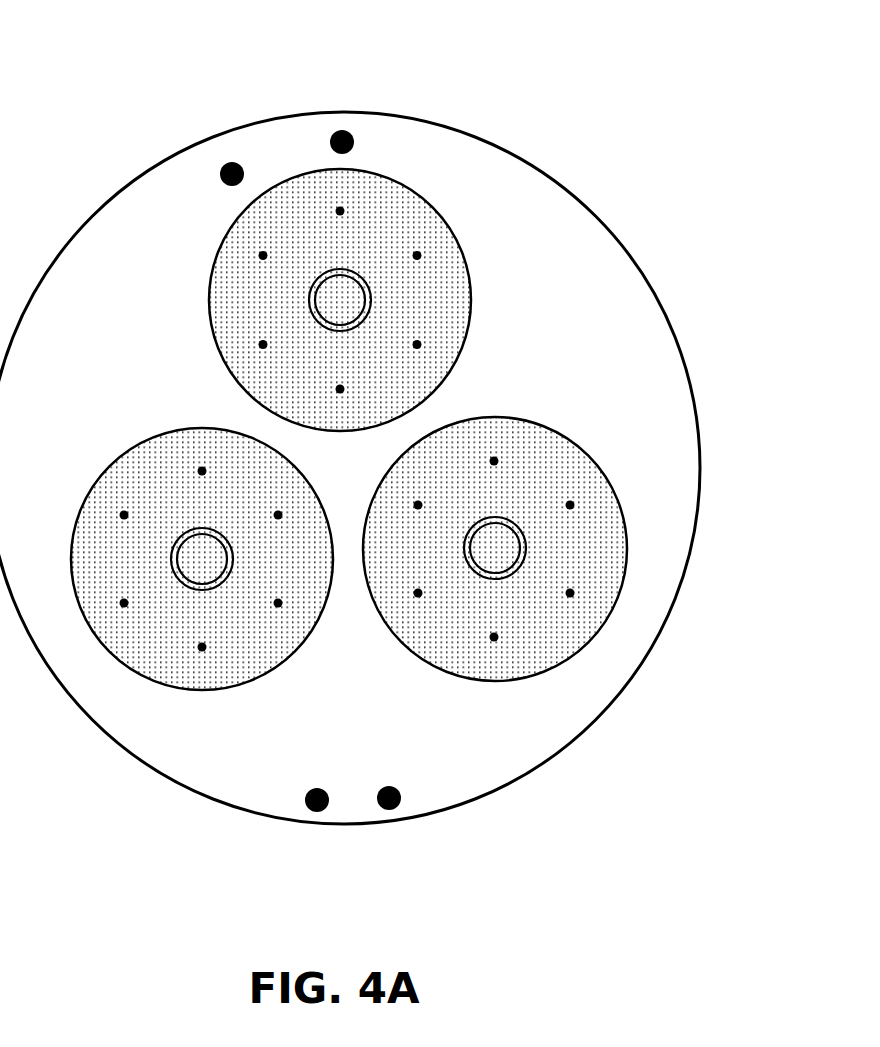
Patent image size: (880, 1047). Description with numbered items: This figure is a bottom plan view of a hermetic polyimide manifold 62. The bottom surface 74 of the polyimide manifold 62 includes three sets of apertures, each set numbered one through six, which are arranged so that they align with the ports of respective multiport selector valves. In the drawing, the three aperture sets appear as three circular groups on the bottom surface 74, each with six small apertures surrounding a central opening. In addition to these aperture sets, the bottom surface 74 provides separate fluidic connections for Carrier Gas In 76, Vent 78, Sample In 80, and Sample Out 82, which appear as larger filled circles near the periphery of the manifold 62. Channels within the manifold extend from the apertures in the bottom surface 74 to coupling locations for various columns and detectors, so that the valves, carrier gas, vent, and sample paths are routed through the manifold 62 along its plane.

The polyimide manifold 62 is at (558, 182).
The bottom surface 74 is at (632, 355).
The Carrier Gas In 76 is at (311, 812).
The Vent 78 is at (390, 811).
The Sample In 80 is at (342, 130).
The Sample Out 82 is at (232, 163).